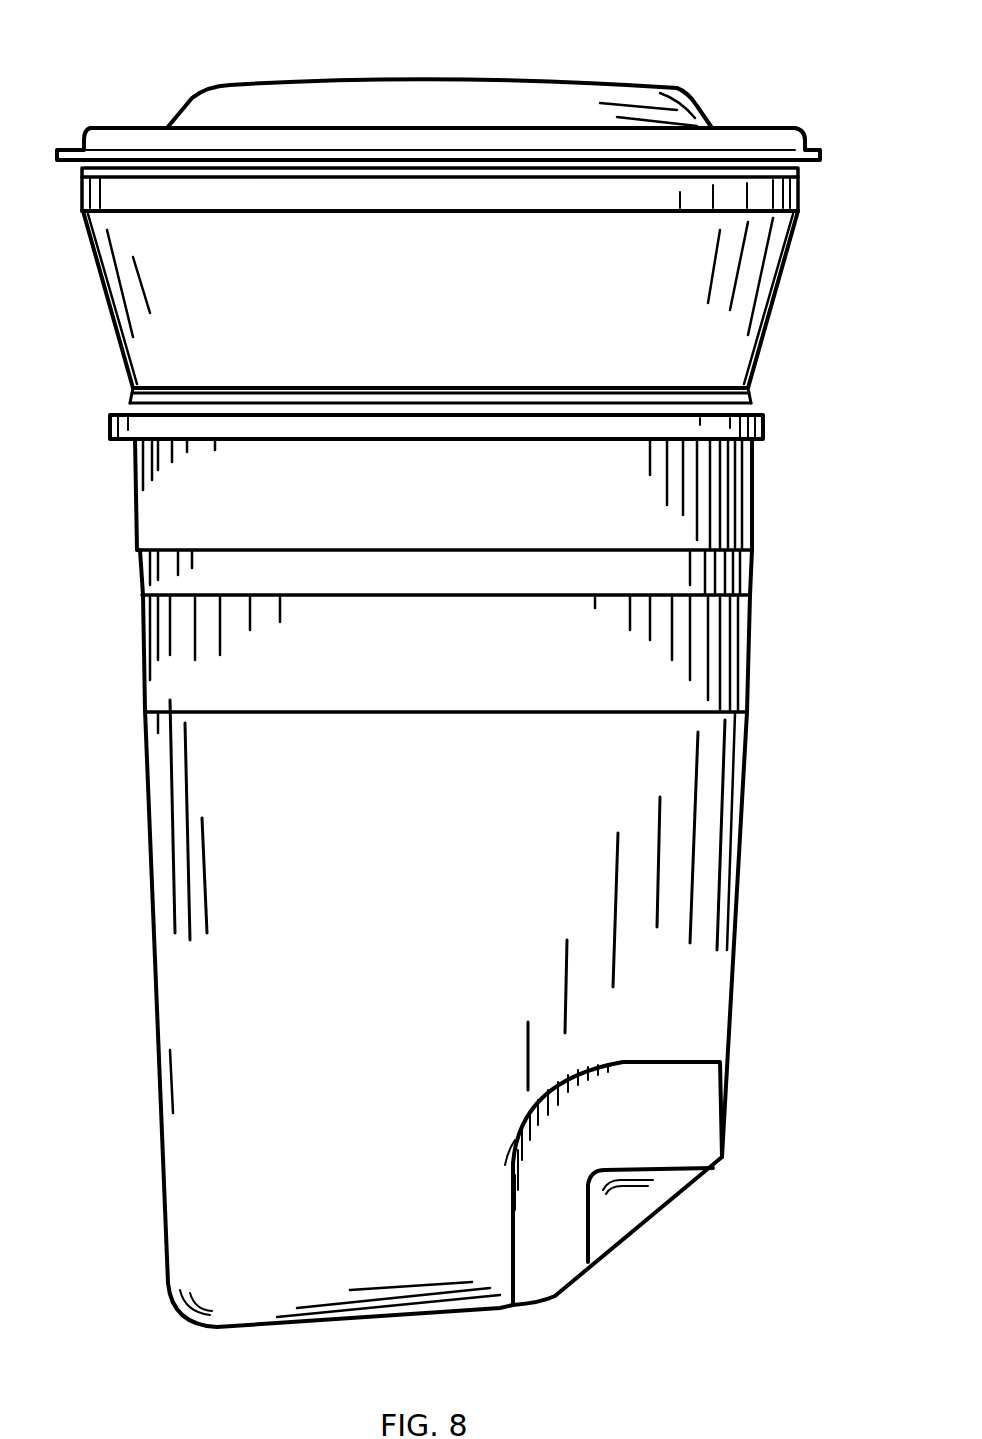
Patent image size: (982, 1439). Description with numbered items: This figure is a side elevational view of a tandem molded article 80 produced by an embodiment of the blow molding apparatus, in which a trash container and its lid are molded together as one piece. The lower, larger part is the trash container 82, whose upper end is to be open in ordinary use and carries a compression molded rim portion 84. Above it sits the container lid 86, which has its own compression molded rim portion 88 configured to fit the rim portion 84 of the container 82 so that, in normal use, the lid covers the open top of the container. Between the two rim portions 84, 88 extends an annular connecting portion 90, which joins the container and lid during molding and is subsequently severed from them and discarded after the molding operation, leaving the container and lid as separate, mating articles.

The tandem molded article 80 is at (145, 77).
The trash container 82 is at (426, 892).
The compression molded rim portion 84 is at (763, 443).
The container lid 86 is at (443, 98).
The compression molded rim portion 88 is at (820, 156).
The annular connecting portion 90 is at (737, 323).